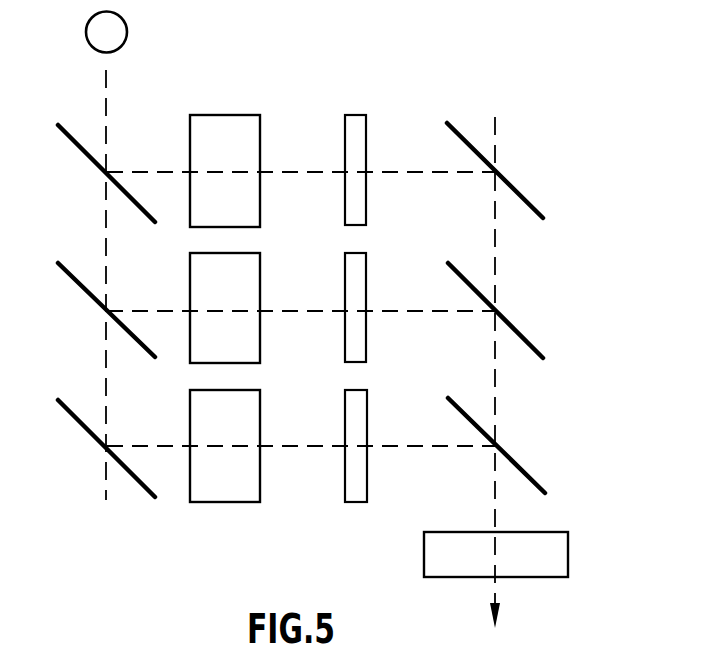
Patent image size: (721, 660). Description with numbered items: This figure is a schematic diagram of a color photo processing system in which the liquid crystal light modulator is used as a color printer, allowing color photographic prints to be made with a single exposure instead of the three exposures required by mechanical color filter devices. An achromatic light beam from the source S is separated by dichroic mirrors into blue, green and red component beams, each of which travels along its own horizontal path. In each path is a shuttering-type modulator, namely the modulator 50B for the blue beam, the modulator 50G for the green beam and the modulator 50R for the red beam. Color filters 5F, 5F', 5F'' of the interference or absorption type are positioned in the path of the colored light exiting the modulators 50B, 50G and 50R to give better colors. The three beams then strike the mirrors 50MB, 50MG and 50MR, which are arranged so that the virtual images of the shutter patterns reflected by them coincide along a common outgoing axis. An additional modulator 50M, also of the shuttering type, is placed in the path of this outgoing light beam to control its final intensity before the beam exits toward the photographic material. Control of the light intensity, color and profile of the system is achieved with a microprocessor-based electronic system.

The source S is at (106, 32).
The modulator 50B is at (187, 155).
The modulator 50G is at (185, 298).
The modulator 50R is at (187, 437).
The color filter 5F is at (378, 158).
The color filter 5F' is at (381, 297).
The color filter 5F'' is at (384, 430).
The mirror 50MB is at (533, 199).
The mirror 50MG is at (530, 331).
The mirror 50MR is at (525, 469).
The additional modulator 50M is at (572, 562).